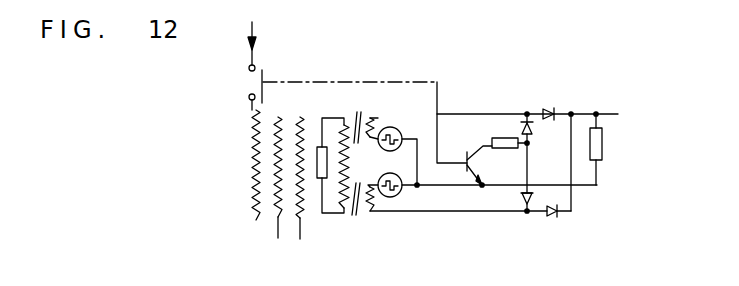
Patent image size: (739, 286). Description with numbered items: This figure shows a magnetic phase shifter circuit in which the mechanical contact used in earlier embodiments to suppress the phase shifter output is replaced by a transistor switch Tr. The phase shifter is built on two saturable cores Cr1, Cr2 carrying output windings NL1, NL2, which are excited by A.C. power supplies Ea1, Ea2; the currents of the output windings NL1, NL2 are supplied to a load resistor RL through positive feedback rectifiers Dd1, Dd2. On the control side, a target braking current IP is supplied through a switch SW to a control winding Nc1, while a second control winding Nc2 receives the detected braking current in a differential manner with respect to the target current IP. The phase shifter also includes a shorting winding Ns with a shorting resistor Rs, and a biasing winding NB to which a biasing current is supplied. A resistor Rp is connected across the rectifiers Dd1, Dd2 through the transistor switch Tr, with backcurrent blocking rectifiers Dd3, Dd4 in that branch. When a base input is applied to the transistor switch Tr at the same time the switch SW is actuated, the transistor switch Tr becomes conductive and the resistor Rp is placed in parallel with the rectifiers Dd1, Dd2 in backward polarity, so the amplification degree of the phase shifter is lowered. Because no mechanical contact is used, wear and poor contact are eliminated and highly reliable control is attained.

The target braking current IP is at (259, 43).
The switch SW is at (249, 89).
The control winding Nc1 is at (252, 199).
The control winding Nc2 is at (277, 202).
The biasing winding NB is at (298, 119).
The shorting resistor Rs is at (317, 152).
The shorting winding Ns is at (359, 166).
The saturable core Cr1 is at (358, 111).
The saturable core Cr2 is at (355, 216).
The output winding NL1 is at (378, 118).
The output winding NL2 is at (377, 213).
The A.C. power supply Ea1 is at (403, 131).
The A.C. power supply Ea2 is at (403, 190).
The transistor switch Tr is at (473, 167).
The resistor Rp is at (498, 137).
The positive feedback rectifier Dd1 is at (551, 108).
The positive feedback rectifier Dd2 is at (551, 217).
The backcurrent blocking rectifier Dd3 is at (534, 127).
The backcurrent blocking rectifier Dd4 is at (523, 200).
The load resistor RL is at (603, 149).